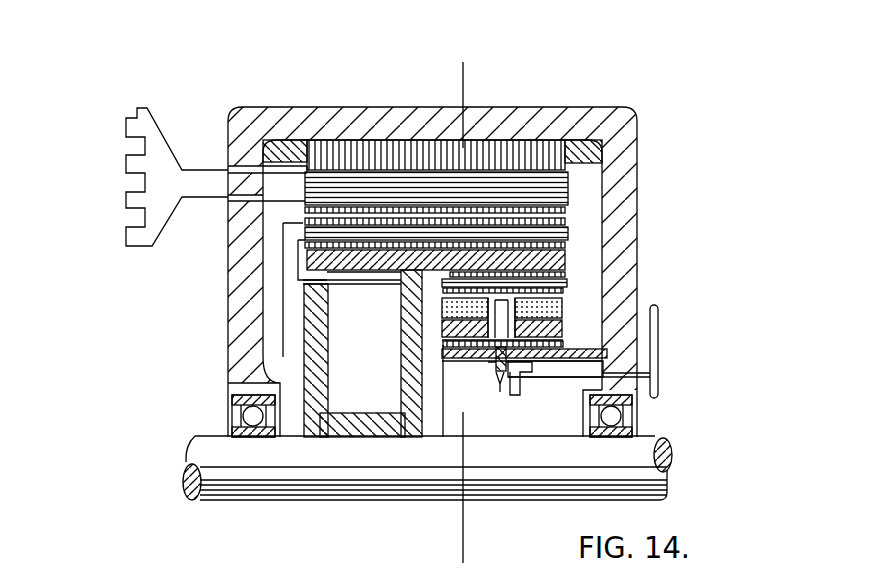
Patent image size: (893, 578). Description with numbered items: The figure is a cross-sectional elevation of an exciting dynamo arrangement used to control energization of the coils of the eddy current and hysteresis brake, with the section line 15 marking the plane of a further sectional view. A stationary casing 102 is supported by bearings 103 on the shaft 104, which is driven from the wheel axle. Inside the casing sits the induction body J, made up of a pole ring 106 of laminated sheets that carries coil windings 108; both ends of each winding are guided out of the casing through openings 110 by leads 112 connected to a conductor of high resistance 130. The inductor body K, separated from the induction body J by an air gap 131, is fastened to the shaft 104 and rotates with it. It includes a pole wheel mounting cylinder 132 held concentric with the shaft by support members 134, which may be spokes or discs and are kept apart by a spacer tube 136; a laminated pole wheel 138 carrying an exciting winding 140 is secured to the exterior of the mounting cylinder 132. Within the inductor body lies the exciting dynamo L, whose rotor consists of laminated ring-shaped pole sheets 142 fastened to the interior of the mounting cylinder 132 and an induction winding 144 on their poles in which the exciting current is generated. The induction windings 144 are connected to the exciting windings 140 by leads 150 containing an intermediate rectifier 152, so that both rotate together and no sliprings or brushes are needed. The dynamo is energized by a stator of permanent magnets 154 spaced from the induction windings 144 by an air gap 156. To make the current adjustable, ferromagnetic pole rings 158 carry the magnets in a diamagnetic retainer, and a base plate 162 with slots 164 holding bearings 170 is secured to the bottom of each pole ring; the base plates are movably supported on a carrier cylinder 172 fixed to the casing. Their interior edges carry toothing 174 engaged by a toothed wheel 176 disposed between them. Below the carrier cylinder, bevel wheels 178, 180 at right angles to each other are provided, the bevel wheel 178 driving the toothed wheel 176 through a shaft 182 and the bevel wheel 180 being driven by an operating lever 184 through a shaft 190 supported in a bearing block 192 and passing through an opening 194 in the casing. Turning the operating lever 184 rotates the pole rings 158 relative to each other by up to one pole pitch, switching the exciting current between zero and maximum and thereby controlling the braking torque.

The stationary casing 102 is at (420, 122).
The bearings 103 is at (251, 417).
The shaft 104 is at (262, 496).
The pole ring 106 is at (383, 147).
The coil windings 108 is at (463, 180).
The openings 110 is at (292, 206).
The leads 112 is at (298, 155).
The conductor of high resistance 130 is at (147, 108).
The air gap 131 is at (570, 217).
The pole wheel mounting cylinder 132 is at (565, 262).
The support members 134 is at (407, 380).
The spacer tube 136 is at (342, 406).
The pole wheel 138 is at (340, 267).
The exciting winding 140 is at (565, 229).
The pole sheets 142 is at (565, 275).
The induction winding 144 is at (562, 292).
The leads 150 is at (343, 288).
The rectifier 152 is at (300, 265).
The permanent magnets 154 is at (442, 306).
The air gap 156 is at (562, 302).
The pole rings 158 is at (442, 330).
The base plate 162 is at (553, 346).
The slots 164 is at (442, 345).
The bearings 170 is at (435, 350).
The carrier cylinder 172 is at (607, 354).
The toothing 174 is at (500, 373).
The toothed wheel 176 is at (492, 362).
The bevel wheel 178 is at (523, 364).
The bevel wheel 180 is at (505, 386).
The shaft 182 is at (526, 354).
The operating lever 184 is at (658, 378).
The shaft 190 is at (578, 383).
The bearing block 192 is at (523, 388).
The opening 194 is at (614, 398).
The section line 15- 15 is at (463, 70).
The induction body J is at (283, 244).
The inductor body K is at (572, 246).
The exciting dynamo L is at (597, 320).